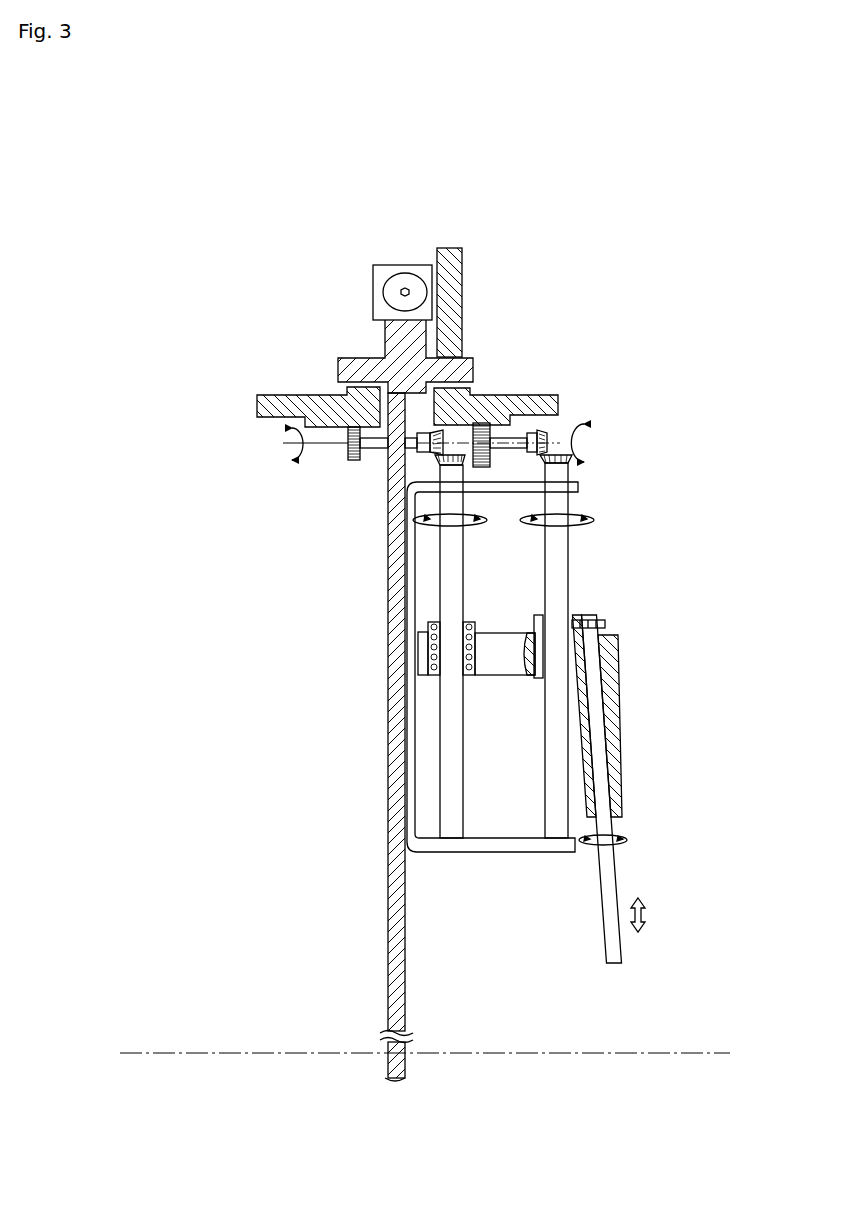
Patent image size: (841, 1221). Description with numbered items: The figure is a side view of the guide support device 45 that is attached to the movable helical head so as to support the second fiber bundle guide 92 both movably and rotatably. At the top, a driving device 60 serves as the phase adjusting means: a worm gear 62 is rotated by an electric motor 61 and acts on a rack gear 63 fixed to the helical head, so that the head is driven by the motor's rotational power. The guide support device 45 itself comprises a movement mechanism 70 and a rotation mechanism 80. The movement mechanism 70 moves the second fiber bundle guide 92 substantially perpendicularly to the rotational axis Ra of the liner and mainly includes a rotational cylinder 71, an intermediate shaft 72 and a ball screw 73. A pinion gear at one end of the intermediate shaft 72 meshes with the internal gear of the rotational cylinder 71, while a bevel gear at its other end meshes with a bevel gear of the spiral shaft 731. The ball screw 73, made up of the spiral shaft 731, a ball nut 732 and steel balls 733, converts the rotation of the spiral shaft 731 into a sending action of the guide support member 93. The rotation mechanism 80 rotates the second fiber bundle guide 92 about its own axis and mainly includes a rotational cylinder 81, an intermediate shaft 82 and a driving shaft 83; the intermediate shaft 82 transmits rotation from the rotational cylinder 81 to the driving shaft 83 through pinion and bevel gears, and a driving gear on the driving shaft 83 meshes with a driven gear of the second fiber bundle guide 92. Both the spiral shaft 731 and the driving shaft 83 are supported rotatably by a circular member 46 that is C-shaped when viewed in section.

The guide support device 45 is at (176, 572).
The circular member 46 is at (488, 852).
The driving device 60 is at (362, 309).
The electric motor 61 is at (373, 290).
The worm gear 62 is at (402, 276).
The rack gear 63 is at (383, 317).
The movement mechanism 70 is at (326, 409).
The rotational cylinder 71 is at (285, 395).
The intermediate shaft 72 is at (370, 456).
The ball screw 73 is at (478, 651).
The spiral shaft 731 is at (465, 538).
The ball nut 732 is at (477, 633).
The steel balls 733 is at (466, 678).
The rotation mechanism 80 is at (521, 580).
The rotational cylinder 81 is at (520, 395).
The intermediate shaft 82 is at (523, 426).
The driving shaft 83 is at (570, 538).
The second fiber bundle guide 92 is at (615, 862).
The guide support member 93 is at (622, 718).
The rotational axis Ra is at (650, 1050).